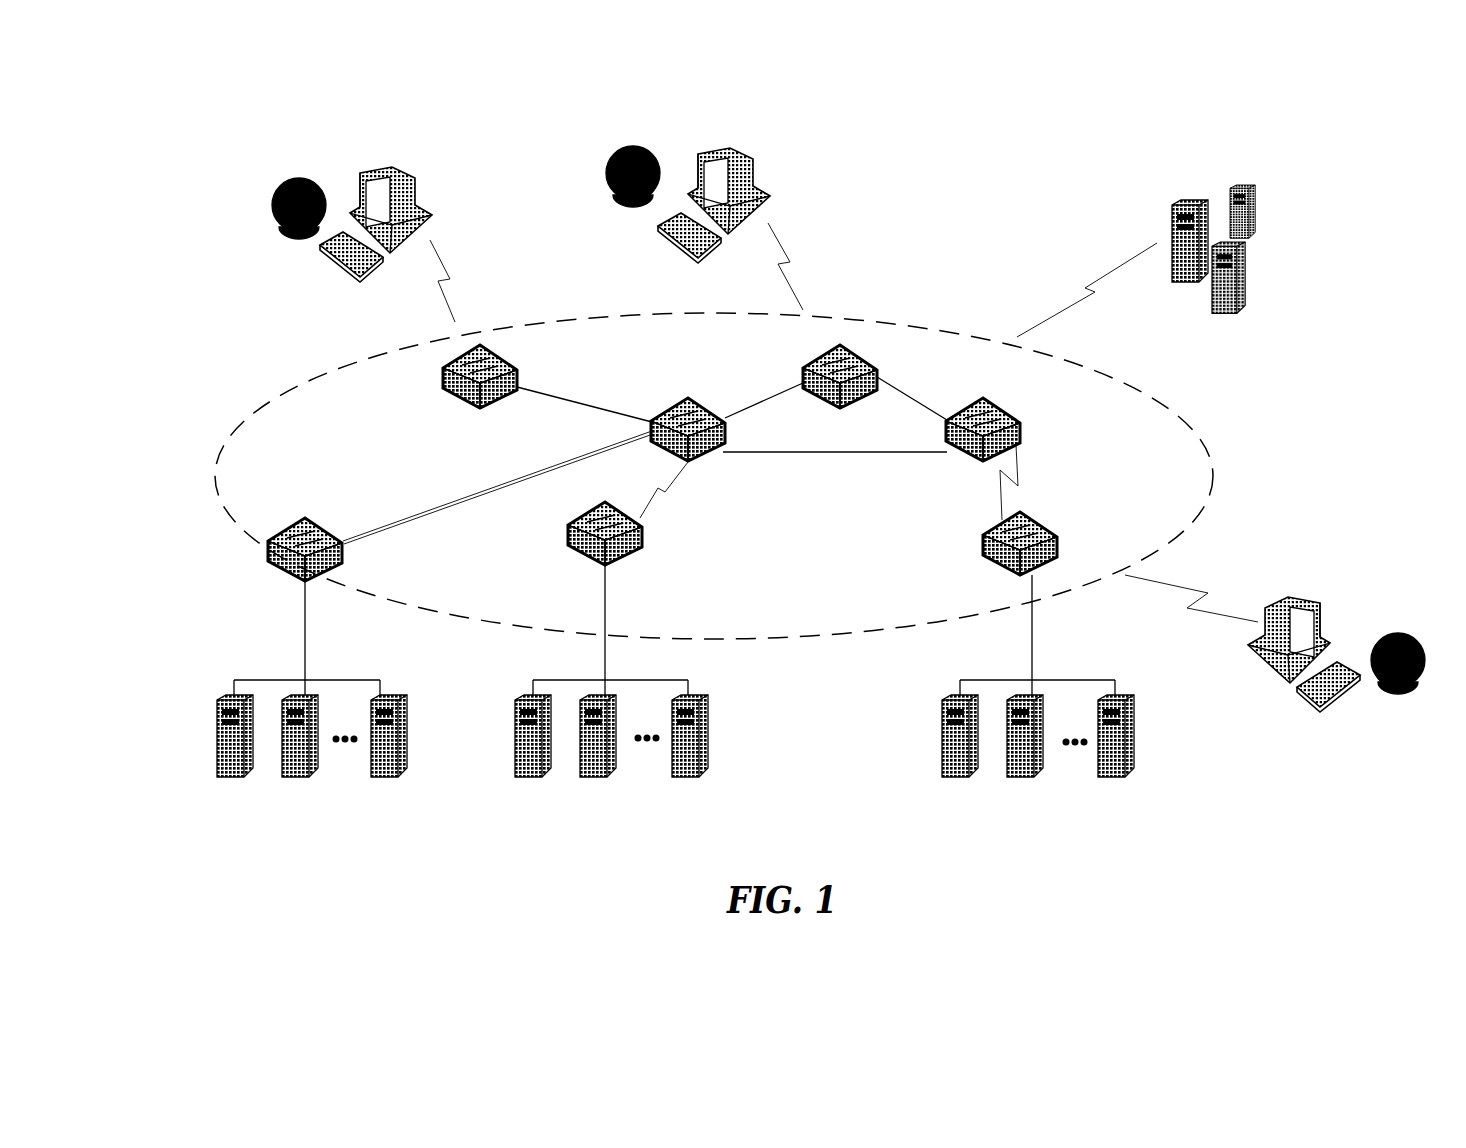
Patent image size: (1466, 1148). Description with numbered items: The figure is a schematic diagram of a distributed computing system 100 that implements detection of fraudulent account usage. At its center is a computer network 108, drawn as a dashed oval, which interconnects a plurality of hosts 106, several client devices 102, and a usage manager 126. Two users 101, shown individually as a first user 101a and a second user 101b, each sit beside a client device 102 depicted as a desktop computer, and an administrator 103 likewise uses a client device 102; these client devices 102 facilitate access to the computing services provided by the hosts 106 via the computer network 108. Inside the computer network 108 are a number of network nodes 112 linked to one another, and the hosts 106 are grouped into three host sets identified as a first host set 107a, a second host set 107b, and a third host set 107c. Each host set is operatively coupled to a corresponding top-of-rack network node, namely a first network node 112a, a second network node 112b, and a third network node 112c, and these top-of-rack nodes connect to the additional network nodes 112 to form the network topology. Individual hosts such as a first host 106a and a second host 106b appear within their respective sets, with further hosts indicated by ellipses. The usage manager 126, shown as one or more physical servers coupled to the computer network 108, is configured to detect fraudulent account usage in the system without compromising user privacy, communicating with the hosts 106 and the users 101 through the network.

The distributed computing system 100 is at (1335, 181).
The users 101 is at (378, 178).
The first user 101a is at (262, 180).
The second user 101b is at (596, 148).
The client device 102 is at (412, 180).
The administrator 103 is at (1410, 607).
The host 106 is at (627, 683).
The first host 106a is at (222, 700).
The second host 106b is at (688, 697).
The first host set 107a is at (252, 691).
The second host set 107b is at (598, 683).
The third host set 107c is at (1086, 645).
The computer network 108 is at (791, 607).
The network node 112 is at (452, 362).
The first top-of-rack network node 112a is at (290, 530).
The second top-of-rack network node 112b is at (570, 530).
The third top-of-rack network node 112c is at (1038, 522).
The usage manager 126 is at (1189, 368).